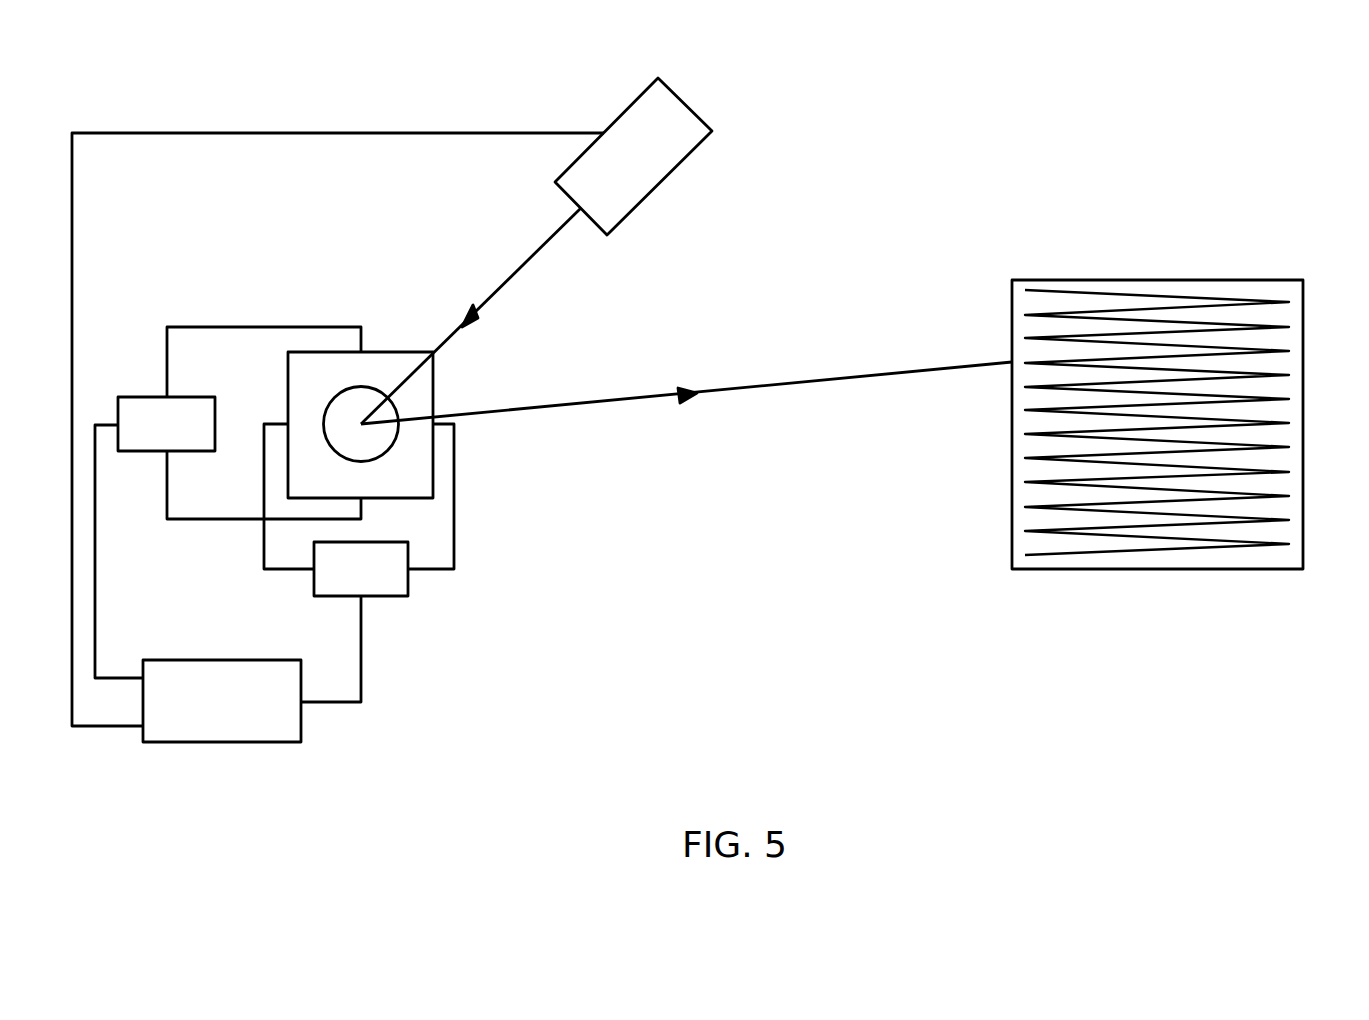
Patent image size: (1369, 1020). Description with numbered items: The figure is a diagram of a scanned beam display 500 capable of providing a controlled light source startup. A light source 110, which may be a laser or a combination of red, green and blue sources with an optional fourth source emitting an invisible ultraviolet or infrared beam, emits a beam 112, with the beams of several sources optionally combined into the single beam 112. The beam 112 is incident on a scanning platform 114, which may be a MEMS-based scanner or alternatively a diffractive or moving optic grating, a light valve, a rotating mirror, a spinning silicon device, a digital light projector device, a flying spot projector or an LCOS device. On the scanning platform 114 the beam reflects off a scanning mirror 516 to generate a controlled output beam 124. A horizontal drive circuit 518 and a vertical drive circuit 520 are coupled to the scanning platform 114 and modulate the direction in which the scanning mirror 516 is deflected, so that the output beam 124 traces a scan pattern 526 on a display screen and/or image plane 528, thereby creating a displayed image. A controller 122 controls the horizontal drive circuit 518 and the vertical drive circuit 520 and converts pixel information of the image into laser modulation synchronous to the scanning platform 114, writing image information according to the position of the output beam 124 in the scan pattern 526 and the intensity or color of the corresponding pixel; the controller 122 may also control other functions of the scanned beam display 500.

The scanned beam display 500 is at (1192, 122).
The light source 110 is at (688, 108).
The beam 112 is at (517, 270).
The scanning platform 114 is at (395, 352).
The scanning mirror 516 is at (387, 451).
The horizontal drive circuit 518 is at (157, 397).
The vertical drive circuit 520 is at (409, 580).
The controller 122 is at (302, 725).
The output beam 124 is at (618, 400).
The scan pattern 526 is at (1205, 298).
The display screen and/or image plane 528 is at (1305, 301).